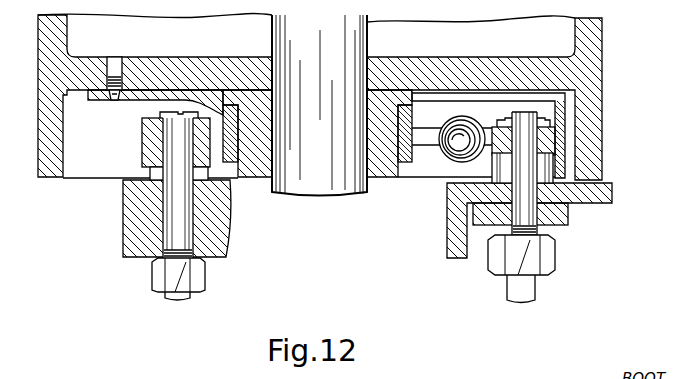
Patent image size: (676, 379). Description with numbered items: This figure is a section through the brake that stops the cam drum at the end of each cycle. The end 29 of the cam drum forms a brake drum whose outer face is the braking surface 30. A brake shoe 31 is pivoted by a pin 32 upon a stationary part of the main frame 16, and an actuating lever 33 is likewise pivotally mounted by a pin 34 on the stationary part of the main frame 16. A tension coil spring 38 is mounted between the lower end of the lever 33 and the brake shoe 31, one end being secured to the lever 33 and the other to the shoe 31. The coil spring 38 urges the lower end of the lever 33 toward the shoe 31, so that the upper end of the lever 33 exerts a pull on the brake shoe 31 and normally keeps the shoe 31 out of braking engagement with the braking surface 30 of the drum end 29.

The main frame 16 is at (225, 258).
The end of cam drum 29 is at (587, 82).
The braking surface 30 is at (63, 160).
The brake shoe 31 is at (560, 137).
The pin 32 is at (552, 225).
The actuating lever 33 is at (145, 141).
The pin 34 is at (170, 300).
The tension coil spring 38 is at (450, 153).